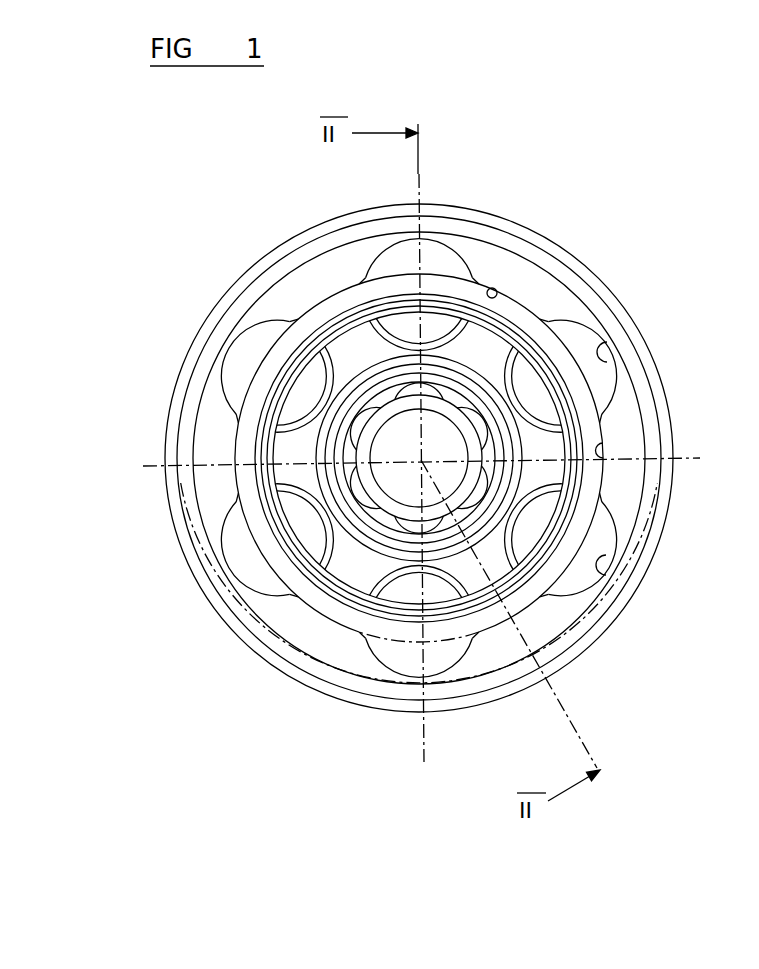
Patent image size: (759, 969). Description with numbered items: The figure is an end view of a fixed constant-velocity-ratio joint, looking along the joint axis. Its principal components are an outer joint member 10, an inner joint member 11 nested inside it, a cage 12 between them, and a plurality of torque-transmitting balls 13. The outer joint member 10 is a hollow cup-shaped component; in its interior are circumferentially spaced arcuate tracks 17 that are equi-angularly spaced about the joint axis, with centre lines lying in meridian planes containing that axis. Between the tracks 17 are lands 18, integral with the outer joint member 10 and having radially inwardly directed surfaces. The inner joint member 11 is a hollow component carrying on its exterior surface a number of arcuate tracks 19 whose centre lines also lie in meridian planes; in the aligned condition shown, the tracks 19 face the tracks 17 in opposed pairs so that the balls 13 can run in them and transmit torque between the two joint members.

The outer joint member 10 is at (612, 605).
The inner joint member 11 is at (489, 345).
The cage 12 is at (287, 383).
The torque-transmitting balls 13 is at (313, 537).
The arcuate tracks 17 is at (613, 370).
The lands 18 is at (497, 290).
The arcuate tracks 19 is at (530, 525).